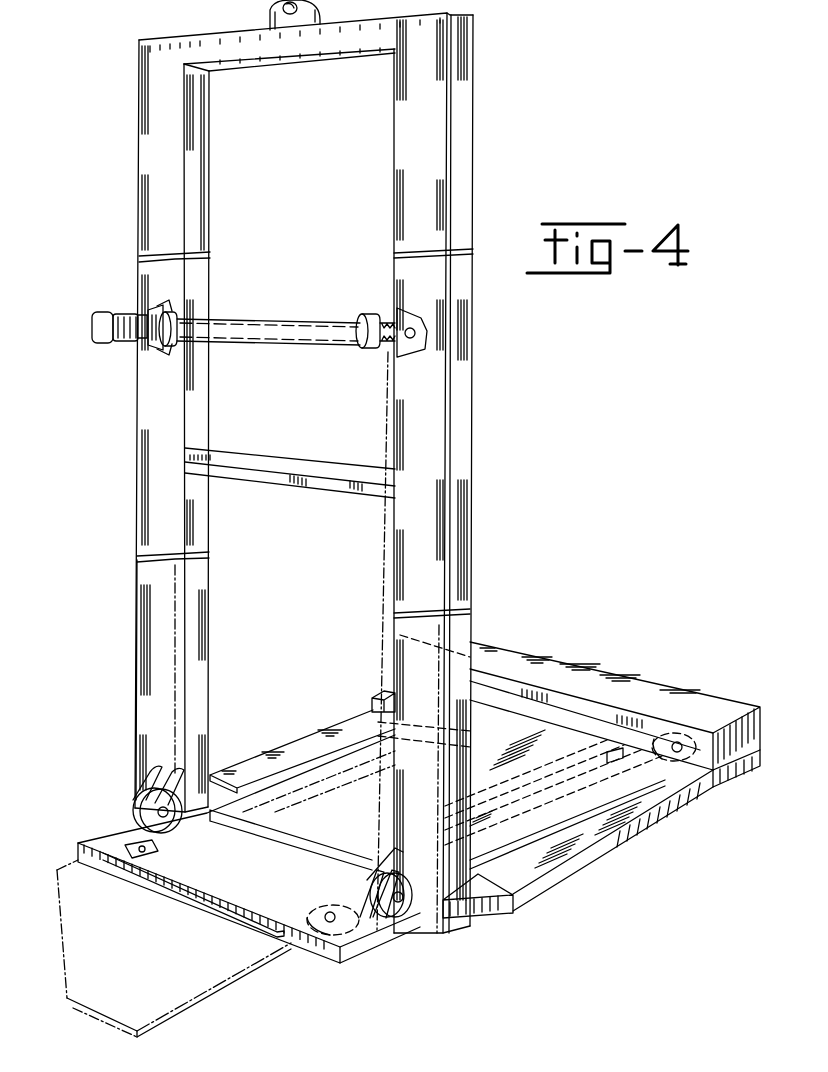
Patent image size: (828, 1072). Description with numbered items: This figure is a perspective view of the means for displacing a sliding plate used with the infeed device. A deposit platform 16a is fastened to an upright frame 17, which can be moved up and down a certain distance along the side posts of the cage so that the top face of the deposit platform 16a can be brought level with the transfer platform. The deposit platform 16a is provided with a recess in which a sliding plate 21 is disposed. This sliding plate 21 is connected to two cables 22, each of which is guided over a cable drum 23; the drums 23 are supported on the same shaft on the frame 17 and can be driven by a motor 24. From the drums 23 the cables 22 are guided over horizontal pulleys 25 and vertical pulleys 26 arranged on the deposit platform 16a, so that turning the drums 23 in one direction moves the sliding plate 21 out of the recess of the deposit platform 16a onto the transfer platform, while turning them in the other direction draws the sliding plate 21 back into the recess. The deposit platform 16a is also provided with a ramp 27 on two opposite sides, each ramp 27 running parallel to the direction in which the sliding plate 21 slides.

The deposit platform 16a is at (630, 855).
The frame 17 is at (437, 148).
The sliding plate 21 is at (550, 767).
The cable 22 is at (387, 408).
The cable drum 23 is at (307, 327).
The motor 24 is at (113, 303).
The horizontal pulley 25 is at (682, 740).
The vertical pulley 26 is at (380, 923).
The ramp 27 is at (565, 863).